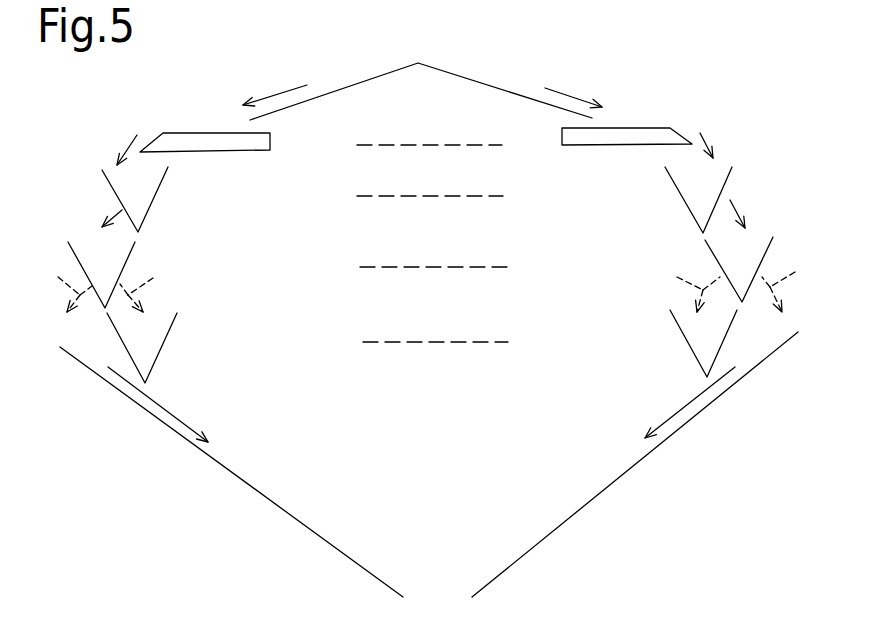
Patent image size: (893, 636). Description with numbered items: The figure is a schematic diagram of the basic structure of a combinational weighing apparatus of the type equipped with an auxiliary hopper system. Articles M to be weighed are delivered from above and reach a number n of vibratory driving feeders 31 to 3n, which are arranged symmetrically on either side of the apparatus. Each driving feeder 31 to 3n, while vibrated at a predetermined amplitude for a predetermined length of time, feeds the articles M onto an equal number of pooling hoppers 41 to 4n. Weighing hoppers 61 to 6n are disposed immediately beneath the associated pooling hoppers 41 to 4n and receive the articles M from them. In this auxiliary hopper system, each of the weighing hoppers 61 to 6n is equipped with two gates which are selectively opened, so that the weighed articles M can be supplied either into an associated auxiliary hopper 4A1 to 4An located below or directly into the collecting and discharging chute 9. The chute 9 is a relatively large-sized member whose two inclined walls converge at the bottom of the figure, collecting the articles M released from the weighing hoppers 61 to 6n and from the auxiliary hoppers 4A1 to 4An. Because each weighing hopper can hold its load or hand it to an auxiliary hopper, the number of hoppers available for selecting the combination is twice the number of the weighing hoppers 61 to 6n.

The articles to be weighed M is at (272, 95).
The driving feeder 31 is at (228, 152).
The driving feeder 3n is at (605, 145).
The pooling hopper 41 is at (158, 192).
The pooling hopper 4n is at (683, 207).
The weighing hopper 61 is at (128, 257).
The weighing hopper 6n is at (708, 248).
The auxiliary hopper 4A1 is at (170, 332).
The auxiliary hopper 4An is at (683, 340).
The collecting and discharging chute 9 is at (608, 488).